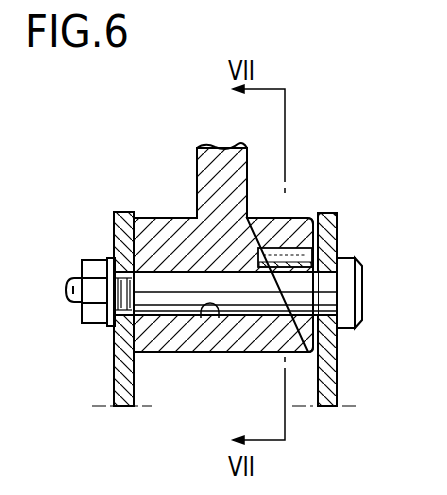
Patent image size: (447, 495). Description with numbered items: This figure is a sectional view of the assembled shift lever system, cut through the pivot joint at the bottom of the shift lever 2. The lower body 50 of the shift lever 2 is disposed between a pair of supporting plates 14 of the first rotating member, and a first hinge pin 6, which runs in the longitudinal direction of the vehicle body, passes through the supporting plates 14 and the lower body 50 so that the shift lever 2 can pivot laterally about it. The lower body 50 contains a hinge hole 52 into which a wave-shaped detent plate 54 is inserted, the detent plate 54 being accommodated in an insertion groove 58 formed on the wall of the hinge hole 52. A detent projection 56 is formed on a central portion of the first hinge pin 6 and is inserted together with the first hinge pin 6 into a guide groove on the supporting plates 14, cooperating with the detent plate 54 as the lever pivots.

The shift lever 2 is at (187, 179).
The first hinge pin 6 is at (248, 278).
The supporting plates 14 is at (358, 283).
The lower body 50 is at (198, 246).
The hinge hole 52 is at (185, 367).
The detent plate 54 is at (235, 348).
The detent projection 56 is at (305, 197).
The insertion groove 58 is at (273, 248).